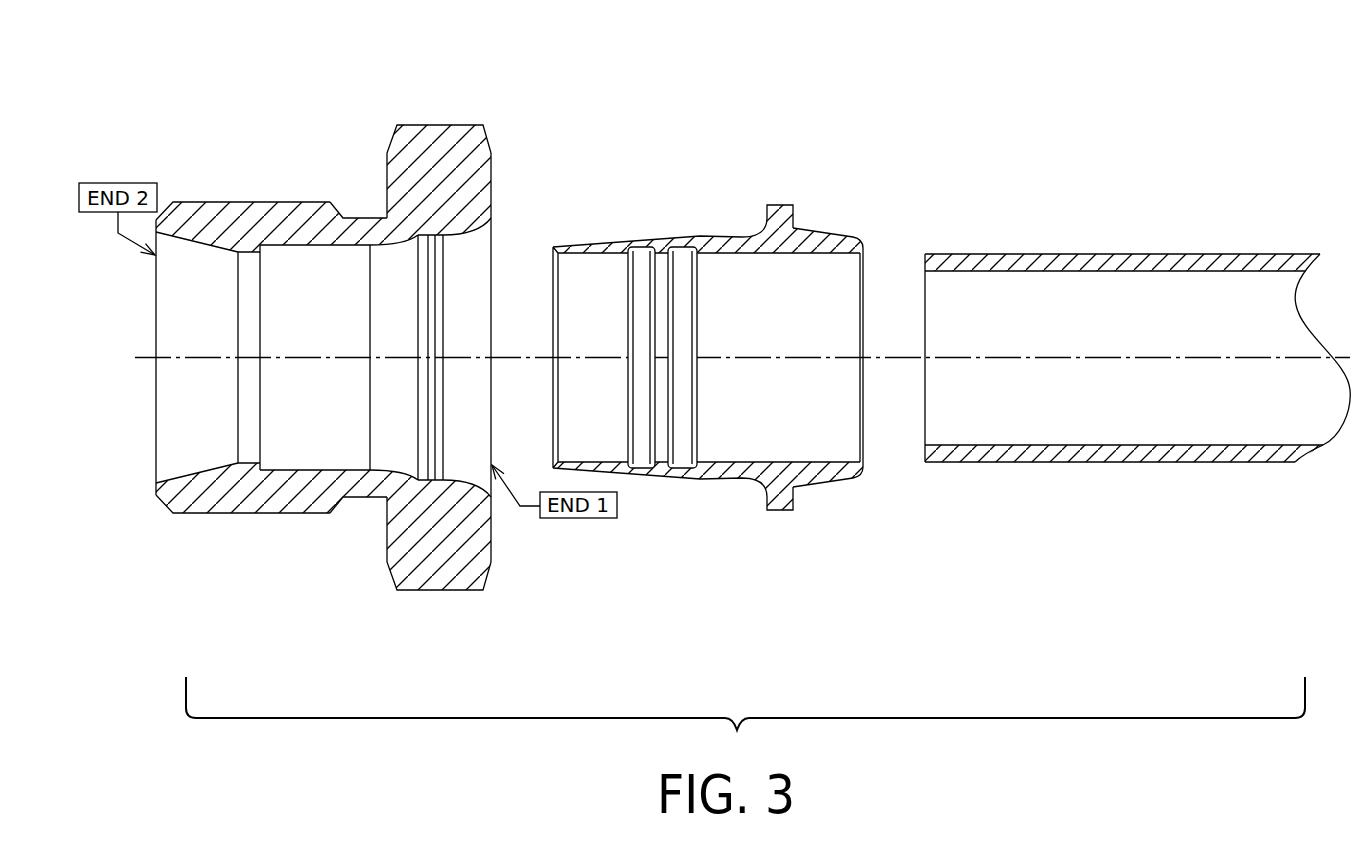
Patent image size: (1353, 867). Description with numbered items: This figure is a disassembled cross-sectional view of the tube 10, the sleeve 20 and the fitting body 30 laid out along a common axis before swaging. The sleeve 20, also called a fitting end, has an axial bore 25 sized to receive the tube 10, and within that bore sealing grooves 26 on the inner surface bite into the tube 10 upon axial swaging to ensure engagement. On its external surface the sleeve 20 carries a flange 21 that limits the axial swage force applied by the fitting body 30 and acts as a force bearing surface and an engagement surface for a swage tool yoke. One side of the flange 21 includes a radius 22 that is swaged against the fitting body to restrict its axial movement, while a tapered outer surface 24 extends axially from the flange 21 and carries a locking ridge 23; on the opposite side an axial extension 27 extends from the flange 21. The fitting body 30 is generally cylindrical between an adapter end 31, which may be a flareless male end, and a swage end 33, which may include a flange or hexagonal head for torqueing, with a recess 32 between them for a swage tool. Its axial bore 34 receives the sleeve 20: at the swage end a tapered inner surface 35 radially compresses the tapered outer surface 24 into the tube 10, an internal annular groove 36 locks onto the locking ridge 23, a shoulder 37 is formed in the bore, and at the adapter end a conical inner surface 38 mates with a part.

The tube 10 is at (1113, 247).
The sleeve 20 is at (759, 335).
The flange 21 is at (793, 502).
The radius 22 is at (753, 490).
The locking ridge 23 is at (708, 230).
The tapered outer surface 24 is at (632, 228).
The axial bore 25 is at (848, 280).
The sealing grooves 26 is at (685, 477).
The axial extension 27 is at (827, 228).
The fitting body 30 is at (390, 313).
The adapter end 31 is at (265, 513).
The recess 32 is at (357, 498).
The swage end 33 is at (437, 118).
The axial bore 34 is at (463, 260).
The tapered inner surface 35 is at (486, 490).
The annular groove 36 is at (440, 228).
The shoulder 37 is at (257, 247).
The conical inner surface 38 is at (202, 465).